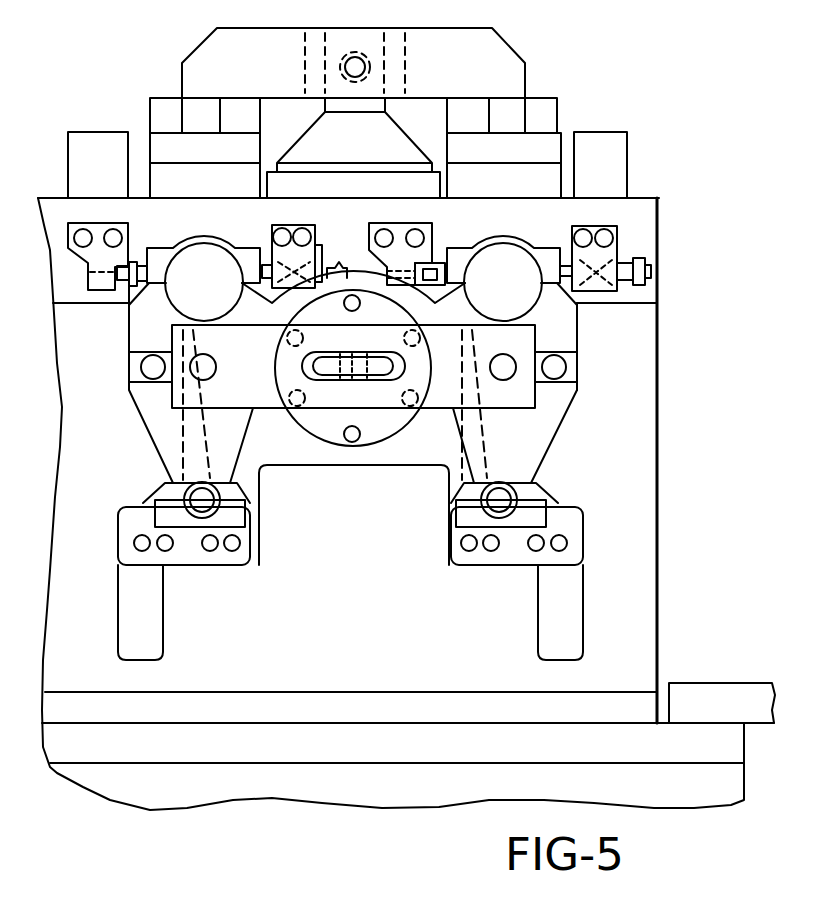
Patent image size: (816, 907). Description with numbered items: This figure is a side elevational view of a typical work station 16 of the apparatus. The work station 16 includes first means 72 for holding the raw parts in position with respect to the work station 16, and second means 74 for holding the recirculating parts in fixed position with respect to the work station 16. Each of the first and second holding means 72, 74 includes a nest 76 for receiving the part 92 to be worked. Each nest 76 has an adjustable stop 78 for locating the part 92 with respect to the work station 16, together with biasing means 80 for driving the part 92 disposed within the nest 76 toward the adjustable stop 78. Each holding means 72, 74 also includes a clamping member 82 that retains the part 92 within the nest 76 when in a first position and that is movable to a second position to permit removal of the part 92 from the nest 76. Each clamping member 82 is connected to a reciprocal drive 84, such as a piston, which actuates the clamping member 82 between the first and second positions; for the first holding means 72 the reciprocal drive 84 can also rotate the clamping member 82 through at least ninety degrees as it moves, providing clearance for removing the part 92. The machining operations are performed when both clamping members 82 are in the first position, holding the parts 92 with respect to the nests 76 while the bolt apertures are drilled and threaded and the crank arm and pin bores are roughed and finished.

The work station 16 is at (686, 428).
The first means for holding the raw parts 72 is at (513, 44).
The second means for holding the recirculating parts 74 is at (157, 455).
The nest 76 is at (146, 174).
The adjustable stop 78 is at (137, 284).
The biasing means 80 is at (268, 233).
The clamping member 82 is at (163, 98).
The reciprocal drive 84 is at (322, 108).
The finished part 92 is at (147, 148).